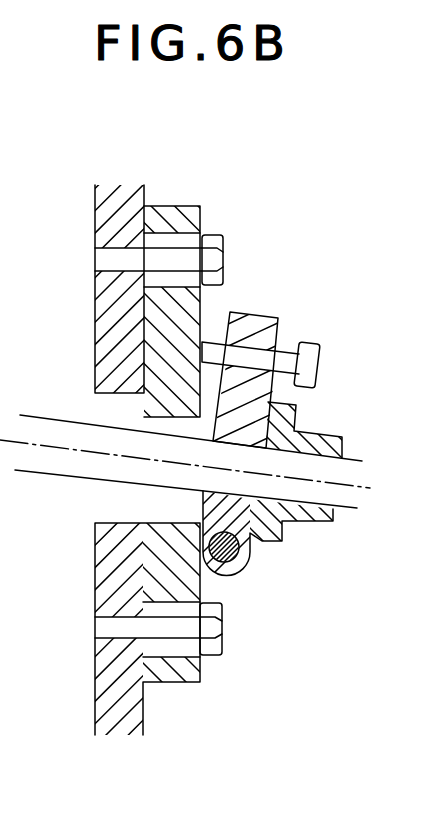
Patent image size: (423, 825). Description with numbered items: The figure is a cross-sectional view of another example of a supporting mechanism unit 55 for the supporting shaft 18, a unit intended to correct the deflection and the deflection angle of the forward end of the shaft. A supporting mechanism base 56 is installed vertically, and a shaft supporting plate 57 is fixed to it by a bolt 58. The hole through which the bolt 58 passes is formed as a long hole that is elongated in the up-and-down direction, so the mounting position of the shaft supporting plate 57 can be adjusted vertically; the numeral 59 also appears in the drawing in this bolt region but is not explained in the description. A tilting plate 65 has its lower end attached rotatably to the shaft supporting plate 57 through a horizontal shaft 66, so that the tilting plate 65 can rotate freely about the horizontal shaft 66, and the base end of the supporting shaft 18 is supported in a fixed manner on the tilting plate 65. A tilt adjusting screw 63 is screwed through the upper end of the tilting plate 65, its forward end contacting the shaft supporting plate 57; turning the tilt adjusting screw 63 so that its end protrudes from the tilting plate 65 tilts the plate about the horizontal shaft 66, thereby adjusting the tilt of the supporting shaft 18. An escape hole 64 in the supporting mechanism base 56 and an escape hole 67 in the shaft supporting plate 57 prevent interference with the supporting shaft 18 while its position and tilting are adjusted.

The supporting shaft 18 is at (48, 415).
The supporting mechanism unit 55 is at (222, 173).
The supporting mechanism base 56 is at (95, 241).
The shaft supporting plate 57 is at (183, 206).
The bolt 58 is at (223, 259).
The through hole 59 is at (207, 300).
The tilt adjusting screw 63 is at (312, 350).
The escape hole 64 is at (103, 495).
The tilting plate 65 is at (258, 313).
The horizontal shaft 66 is at (239, 570).
The escape hole 67 is at (167, 500).